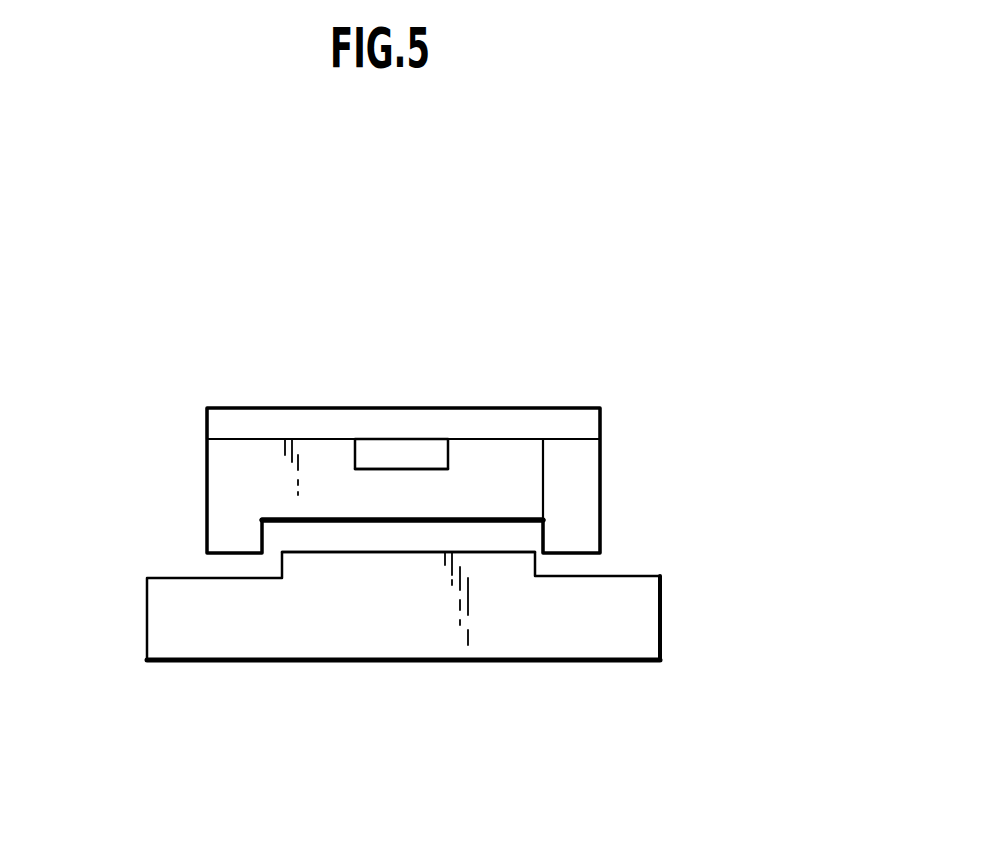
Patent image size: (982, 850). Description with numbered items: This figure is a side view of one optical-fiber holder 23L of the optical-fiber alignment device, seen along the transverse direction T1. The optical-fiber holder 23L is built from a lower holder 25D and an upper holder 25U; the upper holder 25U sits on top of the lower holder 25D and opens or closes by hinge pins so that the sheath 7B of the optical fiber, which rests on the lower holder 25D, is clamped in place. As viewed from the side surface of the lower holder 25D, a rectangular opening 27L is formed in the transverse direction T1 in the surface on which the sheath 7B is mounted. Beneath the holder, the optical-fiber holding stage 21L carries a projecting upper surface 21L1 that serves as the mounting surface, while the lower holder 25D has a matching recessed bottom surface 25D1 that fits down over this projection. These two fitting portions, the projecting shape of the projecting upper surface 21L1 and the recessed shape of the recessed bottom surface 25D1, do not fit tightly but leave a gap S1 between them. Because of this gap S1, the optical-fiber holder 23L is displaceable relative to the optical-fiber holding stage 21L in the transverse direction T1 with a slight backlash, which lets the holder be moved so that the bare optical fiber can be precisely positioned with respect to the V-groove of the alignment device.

The optical-fiber holder 23L is at (196, 495).
The upper holder 25U is at (268, 422).
The lower holder 25D is at (552, 472).
The recessed bottom surface 25D1 is at (482, 522).
The sheath 7B is at (373, 458).
The gap S1 is at (290, 540).
The optical-fiber holding stage 21L is at (505, 635).
The projecting upper surface 21L1 is at (330, 552).
The rectangular opening 27L is at (425, 469).
The transverse direction T1 is at (860, 517).